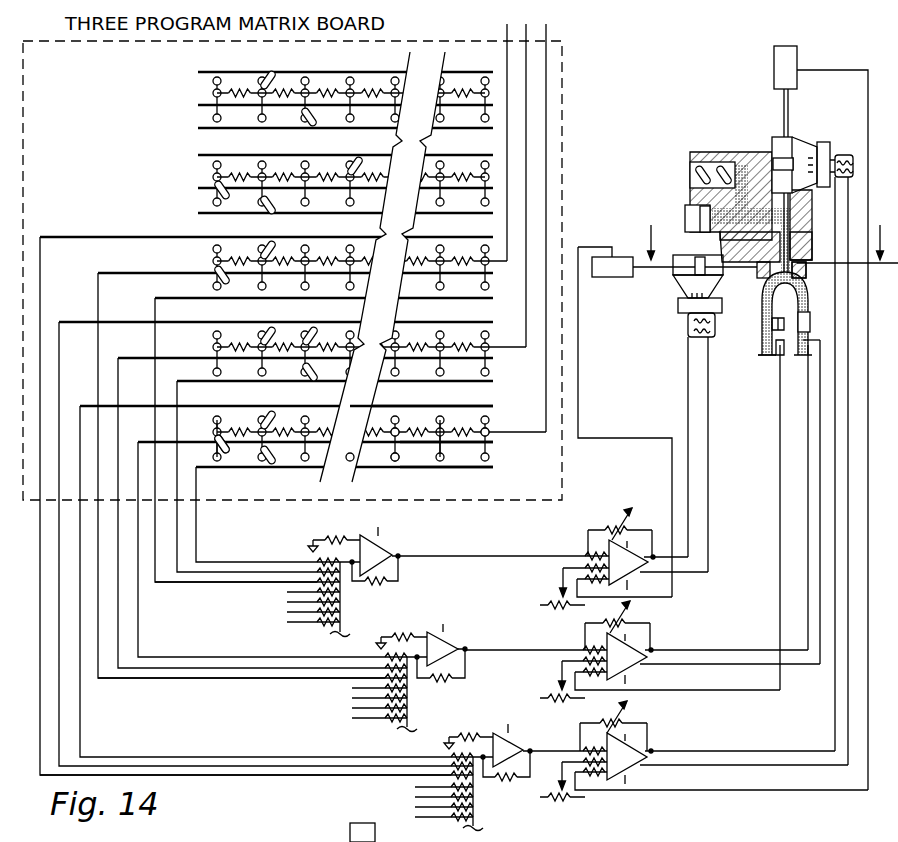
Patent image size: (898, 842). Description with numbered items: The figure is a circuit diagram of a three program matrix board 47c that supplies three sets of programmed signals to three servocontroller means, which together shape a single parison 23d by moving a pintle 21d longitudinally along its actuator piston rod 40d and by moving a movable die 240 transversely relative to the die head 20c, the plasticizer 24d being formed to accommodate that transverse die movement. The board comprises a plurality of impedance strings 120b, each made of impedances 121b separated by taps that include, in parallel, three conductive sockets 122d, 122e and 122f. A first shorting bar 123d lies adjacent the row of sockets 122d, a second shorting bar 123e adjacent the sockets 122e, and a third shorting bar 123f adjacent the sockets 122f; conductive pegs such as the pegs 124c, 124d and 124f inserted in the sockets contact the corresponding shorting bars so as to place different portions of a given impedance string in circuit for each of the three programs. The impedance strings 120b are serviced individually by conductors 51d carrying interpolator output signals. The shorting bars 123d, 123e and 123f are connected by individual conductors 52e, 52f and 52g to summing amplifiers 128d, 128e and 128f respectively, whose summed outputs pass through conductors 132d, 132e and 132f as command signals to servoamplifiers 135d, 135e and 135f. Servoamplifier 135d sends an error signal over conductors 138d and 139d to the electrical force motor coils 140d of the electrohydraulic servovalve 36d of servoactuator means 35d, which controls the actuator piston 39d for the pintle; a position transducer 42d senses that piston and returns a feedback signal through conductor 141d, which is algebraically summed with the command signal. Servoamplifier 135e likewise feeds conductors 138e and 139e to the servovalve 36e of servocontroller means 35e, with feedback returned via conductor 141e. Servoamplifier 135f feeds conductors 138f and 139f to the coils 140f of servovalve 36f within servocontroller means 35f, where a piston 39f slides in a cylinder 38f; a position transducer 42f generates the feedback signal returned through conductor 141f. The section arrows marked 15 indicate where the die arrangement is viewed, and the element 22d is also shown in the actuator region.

The three program matrix board 47c is at (562, 45).
The conductors 51d is at (530, 28).
The impedance string 120b is at (490, 424).
The impedances 121b is at (238, 424).
The conductive sockets 122d is at (441, 428).
The conductive sockets 122e is at (380, 438).
The conductive sockets 122f is at (425, 457).
The first shorting bar 123d is at (424, 418).
The second shorting bar 123e is at (488, 442).
The third shorting bar 123f is at (480, 467).
The plug 124c is at (214, 439).
The conductive peg 124d is at (262, 418).
The conductive peg 124f is at (264, 464).
The conductors 52g is at (264, 570).
The conductors 52f is at (188, 662).
The conductors 52e is at (238, 758).
The summing amplifier 128f is at (390, 543).
The summing amplifier 128e is at (448, 642).
The summing amplifier 128d is at (526, 737).
The conductor 132f is at (506, 556).
The conductor 132e is at (560, 650).
The conductor 132d is at (560, 755).
The servoamplifier 135f is at (629, 581).
The servoamplifier 135e is at (643, 675).
The servoamplifier 135d is at (648, 775).
The conductor 138f is at (688, 410).
The conductor 139f is at (708, 410).
The conductor 141f is at (608, 438).
The conductor 138e is at (744, 654).
The conductor 139e is at (746, 665).
The feedback conductor 141e is at (724, 694).
The conductor 138d is at (780, 752).
The conductor 139d is at (792, 765).
The conductor 141d is at (828, 790).
The position transducer 42f is at (604, 281).
The position transducer 42d is at (774, 60).
The cylinder 38f is at (698, 258).
The piston 39f is at (696, 258).
The servocontroller means 35f is at (672, 284).
The electrohydraulic servovalve 36f is at (676, 314).
The electrical force motor coils 140f is at (688, 335).
The section line 15 is at (770, 234).
The plasticizer 24d is at (690, 158).
The actuator piston rod 40d is at (791, 218).
The die head 20c is at (796, 244).
The piston 22d is at (798, 266).
The pintle 21d is at (798, 290).
The servocontroller means 35e is at (808, 330).
The movable die 240 is at (754, 290).
The parison 23d is at (760, 354).
The electrohydraulic servovalve 36e is at (780, 356).
The actuator piston 39d is at (772, 160).
The servoactuator means 35d is at (796, 130).
The electrohydraulic servovalve 36d is at (820, 145).
The electrical force motor coils 140d is at (846, 152).